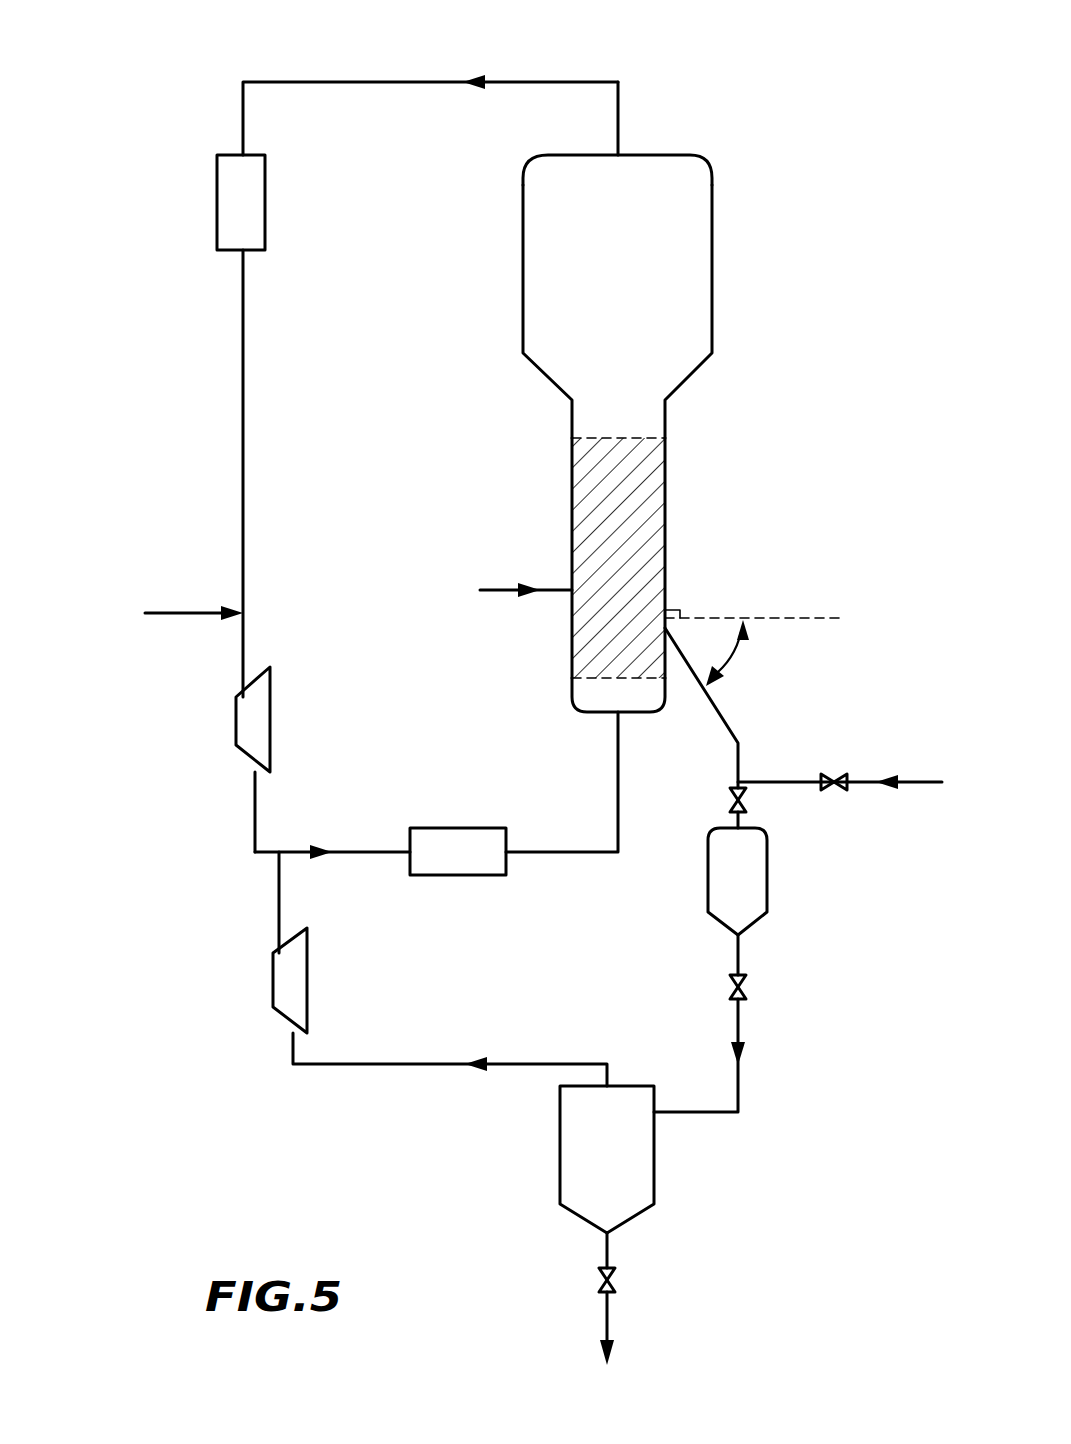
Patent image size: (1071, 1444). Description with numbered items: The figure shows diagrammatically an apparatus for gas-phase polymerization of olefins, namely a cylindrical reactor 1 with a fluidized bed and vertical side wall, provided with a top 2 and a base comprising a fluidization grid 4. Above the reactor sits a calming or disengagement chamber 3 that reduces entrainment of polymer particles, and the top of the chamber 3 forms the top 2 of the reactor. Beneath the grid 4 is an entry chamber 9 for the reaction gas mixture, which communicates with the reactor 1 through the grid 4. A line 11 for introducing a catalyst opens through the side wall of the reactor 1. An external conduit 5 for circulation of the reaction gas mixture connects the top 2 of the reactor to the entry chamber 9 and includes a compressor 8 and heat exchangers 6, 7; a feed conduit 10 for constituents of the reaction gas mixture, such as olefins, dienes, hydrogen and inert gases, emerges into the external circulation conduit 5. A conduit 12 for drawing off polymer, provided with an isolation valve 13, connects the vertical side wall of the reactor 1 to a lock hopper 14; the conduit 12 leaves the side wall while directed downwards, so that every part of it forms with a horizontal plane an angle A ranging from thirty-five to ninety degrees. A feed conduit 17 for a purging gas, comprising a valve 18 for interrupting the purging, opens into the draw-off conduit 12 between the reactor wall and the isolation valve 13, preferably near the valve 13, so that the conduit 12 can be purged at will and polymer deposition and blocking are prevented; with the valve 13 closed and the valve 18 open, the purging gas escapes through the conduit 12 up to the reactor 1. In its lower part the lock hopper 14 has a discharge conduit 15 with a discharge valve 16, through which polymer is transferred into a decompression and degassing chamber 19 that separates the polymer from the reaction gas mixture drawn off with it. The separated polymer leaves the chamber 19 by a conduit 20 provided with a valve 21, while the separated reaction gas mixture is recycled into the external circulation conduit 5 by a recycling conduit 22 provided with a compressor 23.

The cylindrical reactor 1 is at (560, 530).
The top of the reactor 2 is at (672, 157).
The calming or disengagement chamber 3 is at (713, 305).
The fluidization grid 4 is at (588, 676).
The external conduit 5 is at (372, 82).
The heat exchanger 6 is at (217, 205).
The heat exchanger 7 is at (457, 875).
The compressor 8 is at (236, 717).
The entry chamber 9 is at (590, 710).
The feed conduit 10 is at (158, 612).
The line for introducing a catalyst 11 is at (490, 590).
The conduit for drawing off polymer 12 is at (728, 726).
The isolation valve 13 is at (730, 800).
The lock hopper 14 is at (770, 873).
The discharge conduit 15 is at (735, 1030).
The discharge valve 16 is at (745, 988).
The feed conduit for a purging gas 17 is at (918, 782).
The valve 18 is at (836, 774).
The decompression and degassing chamber 19 is at (657, 1170).
The conduit 20 is at (610, 1318).
The valve 21 is at (600, 1283).
The recycling conduit 22 is at (385, 1064).
The compressor 23 is at (273, 978).
The angle A is at (735, 668).